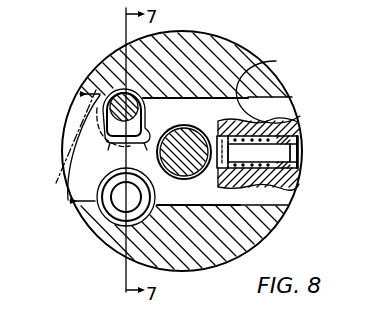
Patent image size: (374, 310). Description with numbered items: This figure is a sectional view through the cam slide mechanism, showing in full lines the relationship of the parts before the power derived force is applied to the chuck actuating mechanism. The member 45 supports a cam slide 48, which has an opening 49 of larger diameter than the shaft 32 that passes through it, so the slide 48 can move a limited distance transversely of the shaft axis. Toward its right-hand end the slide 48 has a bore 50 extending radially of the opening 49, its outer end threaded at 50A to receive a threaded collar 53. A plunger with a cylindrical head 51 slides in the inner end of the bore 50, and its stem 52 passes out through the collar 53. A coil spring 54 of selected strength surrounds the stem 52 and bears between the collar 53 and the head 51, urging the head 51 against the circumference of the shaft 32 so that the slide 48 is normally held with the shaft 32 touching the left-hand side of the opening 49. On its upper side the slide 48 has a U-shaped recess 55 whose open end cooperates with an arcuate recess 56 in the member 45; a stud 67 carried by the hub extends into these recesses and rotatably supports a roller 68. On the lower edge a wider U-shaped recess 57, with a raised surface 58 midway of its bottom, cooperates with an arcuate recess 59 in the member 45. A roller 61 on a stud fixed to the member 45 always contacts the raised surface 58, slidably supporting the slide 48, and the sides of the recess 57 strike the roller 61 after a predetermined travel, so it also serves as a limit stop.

The member 45 is at (194, 36).
The cam slide 48 is at (276, 61).
The opening 49 is at (192, 102).
The bore 50 is at (300, 104).
The threaded outer end 50A is at (303, 160).
The cylindrical head 51 is at (229, 188).
The stem 52 is at (303, 180).
The threaded collar 53 is at (299, 123).
The coil spring 54 is at (246, 108).
The U-shaped recess 55 is at (156, 160).
The arcuate recess 56 is at (99, 82).
The U-shaped recess 57 is at (102, 190).
The raised surface 58 is at (125, 162).
The arcuate recess 59 is at (116, 233).
The roller 61 is at (110, 213).
The stud 67 is at (142, 107).
The roller 68 is at (100, 136).
The shaft 32 is at (188, 183).